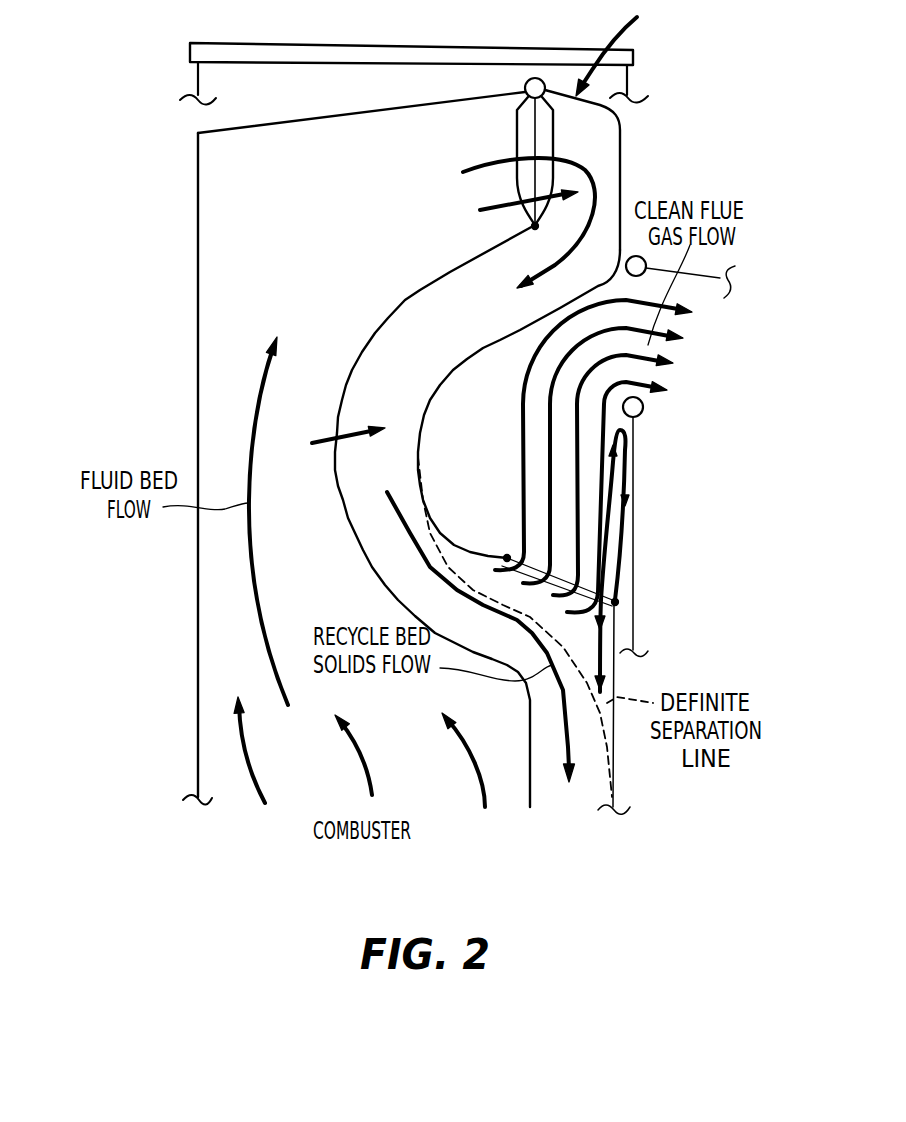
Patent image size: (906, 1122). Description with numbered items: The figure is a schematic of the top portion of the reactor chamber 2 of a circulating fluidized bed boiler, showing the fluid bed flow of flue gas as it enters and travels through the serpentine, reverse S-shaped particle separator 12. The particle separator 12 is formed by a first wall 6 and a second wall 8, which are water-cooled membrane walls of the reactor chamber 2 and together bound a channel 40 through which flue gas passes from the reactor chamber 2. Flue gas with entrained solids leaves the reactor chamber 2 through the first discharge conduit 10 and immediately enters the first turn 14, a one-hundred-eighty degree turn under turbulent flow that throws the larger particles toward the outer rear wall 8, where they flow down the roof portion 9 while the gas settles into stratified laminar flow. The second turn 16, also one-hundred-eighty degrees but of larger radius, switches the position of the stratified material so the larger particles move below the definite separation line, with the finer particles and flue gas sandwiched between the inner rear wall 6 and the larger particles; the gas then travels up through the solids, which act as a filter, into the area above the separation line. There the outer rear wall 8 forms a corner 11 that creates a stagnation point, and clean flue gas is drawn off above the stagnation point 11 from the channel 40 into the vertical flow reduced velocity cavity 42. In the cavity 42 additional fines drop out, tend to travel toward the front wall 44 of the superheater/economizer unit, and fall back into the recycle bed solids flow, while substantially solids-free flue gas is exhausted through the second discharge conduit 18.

The reactor chamber 2 is at (375, 883).
The first wall 6 is at (438, 278).
The second wall 8 is at (622, 146).
The roof portion 9 is at (488, 348).
The first discharge conduit 10 is at (518, 126).
The corner 11 is at (617, 602).
The particle separator 12 is at (622, 49).
The first turn 14 is at (522, 223).
The second turn 16 is at (333, 444).
The second discharge conduit 18 is at (526, 562).
The channel 40 is at (398, 393).
The vertical flow reduced velocity cavity 42 is at (487, 460).
The front wall 44 is at (636, 500).